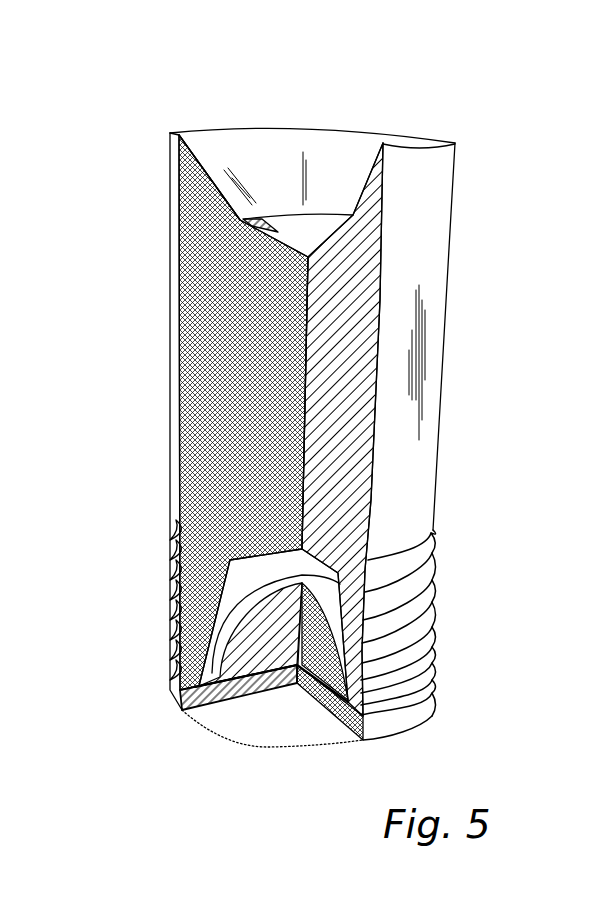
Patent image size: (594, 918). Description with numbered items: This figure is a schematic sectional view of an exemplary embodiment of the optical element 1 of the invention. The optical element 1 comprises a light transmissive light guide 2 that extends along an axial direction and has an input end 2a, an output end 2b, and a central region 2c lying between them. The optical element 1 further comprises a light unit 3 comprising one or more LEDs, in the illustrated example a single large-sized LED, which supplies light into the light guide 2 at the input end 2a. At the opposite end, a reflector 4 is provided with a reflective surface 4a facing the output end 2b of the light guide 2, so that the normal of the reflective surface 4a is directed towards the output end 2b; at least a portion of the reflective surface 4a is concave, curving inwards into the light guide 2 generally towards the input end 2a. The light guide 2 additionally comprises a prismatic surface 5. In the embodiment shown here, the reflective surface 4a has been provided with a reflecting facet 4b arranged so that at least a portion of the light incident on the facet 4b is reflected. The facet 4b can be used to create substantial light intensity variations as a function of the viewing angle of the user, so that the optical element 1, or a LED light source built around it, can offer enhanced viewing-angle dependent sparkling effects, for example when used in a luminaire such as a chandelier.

The optical element 1 is at (88, 116).
The light guide 2 is at (476, 302).
The input end 2a is at (187, 652).
The output end 2b is at (188, 177).
The central region 2c is at (418, 463).
The light unit 3 is at (263, 625).
The reflector 4 is at (255, 153).
The reflective surface 4a is at (230, 212).
The reflecting facet 4b is at (280, 232).
The prismatic surface 5 is at (463, 612).